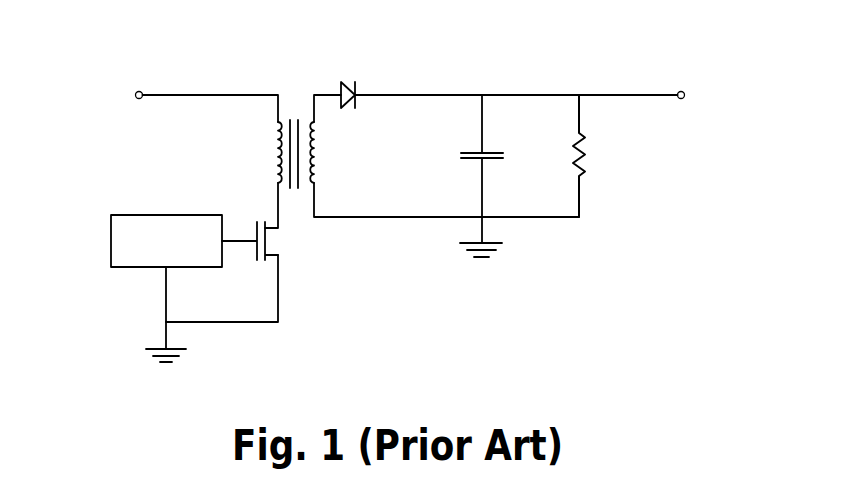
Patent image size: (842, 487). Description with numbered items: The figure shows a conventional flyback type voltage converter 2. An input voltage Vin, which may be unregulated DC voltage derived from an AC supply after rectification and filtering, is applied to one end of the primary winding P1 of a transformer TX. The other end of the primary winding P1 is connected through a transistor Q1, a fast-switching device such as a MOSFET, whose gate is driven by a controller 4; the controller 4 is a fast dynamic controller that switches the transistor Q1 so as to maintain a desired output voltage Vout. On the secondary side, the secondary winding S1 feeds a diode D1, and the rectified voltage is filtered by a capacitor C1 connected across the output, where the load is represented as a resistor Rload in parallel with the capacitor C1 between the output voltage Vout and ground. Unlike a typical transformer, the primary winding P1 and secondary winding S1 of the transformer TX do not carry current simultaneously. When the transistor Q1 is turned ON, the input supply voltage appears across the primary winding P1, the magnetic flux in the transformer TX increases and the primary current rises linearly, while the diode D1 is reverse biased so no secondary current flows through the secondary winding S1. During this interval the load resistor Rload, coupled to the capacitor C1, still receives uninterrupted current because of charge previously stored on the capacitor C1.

The converter 2 is at (287, 67).
The controller 4 is at (166, 215).
The transformer TX is at (294, 165).
The primary winding P1 is at (261, 152).
The secondary winding S1 is at (329, 152).
The diode D1 is at (347, 80).
The capacitor C1 is at (465, 169).
The resistor Rload is at (609, 156).
The transistor Q1 is at (262, 241).
The input voltage Vin is at (186, 103).
The output voltage Vout is at (545, 95).